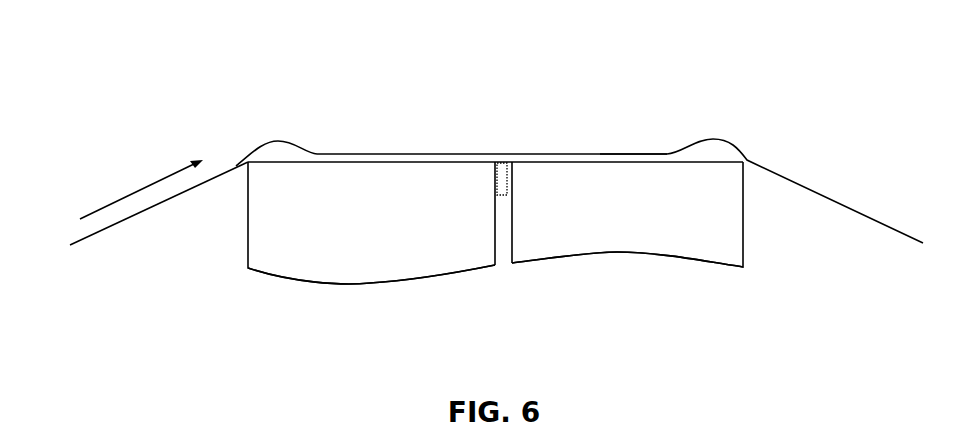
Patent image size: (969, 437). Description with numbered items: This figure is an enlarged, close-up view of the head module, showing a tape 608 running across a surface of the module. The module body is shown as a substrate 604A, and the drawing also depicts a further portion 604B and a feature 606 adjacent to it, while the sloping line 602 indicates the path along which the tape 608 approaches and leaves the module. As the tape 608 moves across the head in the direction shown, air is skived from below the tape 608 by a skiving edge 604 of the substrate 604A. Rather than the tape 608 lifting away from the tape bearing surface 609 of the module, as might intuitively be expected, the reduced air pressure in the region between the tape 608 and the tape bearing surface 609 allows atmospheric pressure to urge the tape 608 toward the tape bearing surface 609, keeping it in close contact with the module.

The substrate / web 602 is at (268, 128).
The skiving edge 604 is at (246, 166).
The substrate 604A is at (354, 267).
The second portion of body 604B is at (650, 232).
The slot / seam 606 is at (505, 158).
The tape 608 is at (373, 153).
The tape bearing surface 609 is at (625, 160).